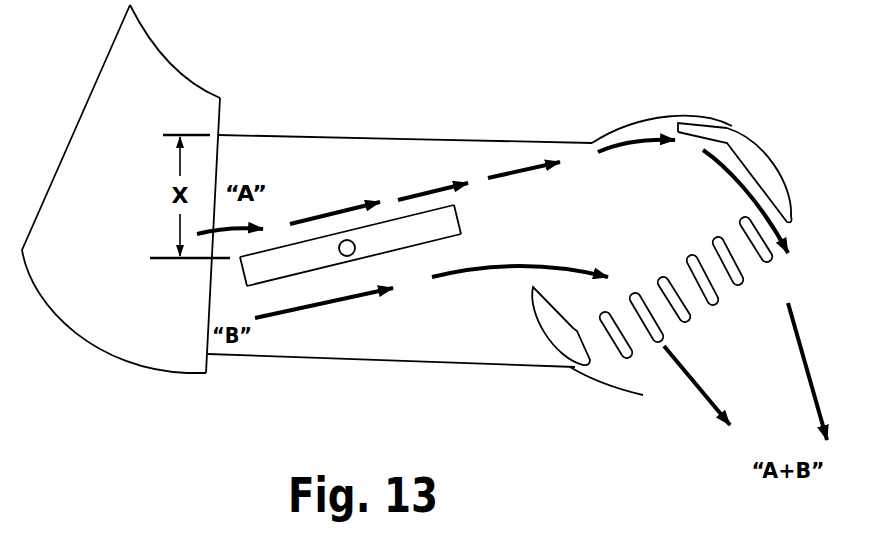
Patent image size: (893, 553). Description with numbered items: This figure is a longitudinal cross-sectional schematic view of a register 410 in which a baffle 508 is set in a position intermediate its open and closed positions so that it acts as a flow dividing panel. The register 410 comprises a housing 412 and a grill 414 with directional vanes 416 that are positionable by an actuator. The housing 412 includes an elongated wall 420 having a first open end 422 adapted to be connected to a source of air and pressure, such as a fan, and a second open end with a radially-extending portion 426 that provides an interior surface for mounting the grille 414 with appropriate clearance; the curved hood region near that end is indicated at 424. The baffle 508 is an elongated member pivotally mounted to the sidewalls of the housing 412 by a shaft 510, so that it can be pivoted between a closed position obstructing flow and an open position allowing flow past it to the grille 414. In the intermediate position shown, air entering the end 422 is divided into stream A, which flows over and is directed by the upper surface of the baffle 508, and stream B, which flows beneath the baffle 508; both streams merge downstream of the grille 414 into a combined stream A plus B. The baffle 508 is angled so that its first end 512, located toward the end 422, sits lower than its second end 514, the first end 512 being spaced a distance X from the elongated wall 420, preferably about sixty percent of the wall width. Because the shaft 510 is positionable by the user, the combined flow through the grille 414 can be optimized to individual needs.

The register 410 is at (417, 131).
The housing 412 is at (530, 141).
The grill 414 is at (784, 174).
The directional vanes 416 is at (767, 260).
The elongated wall 420 is at (323, 137).
The first open end 422 is at (220, 135).
The curved hood 424 is at (592, 143).
The radially-extending portion 426 is at (683, 115).
The baffle 508 is at (277, 241).
The shaft 510 is at (348, 256).
The first end 512 is at (243, 277).
The second end 514 is at (462, 220).